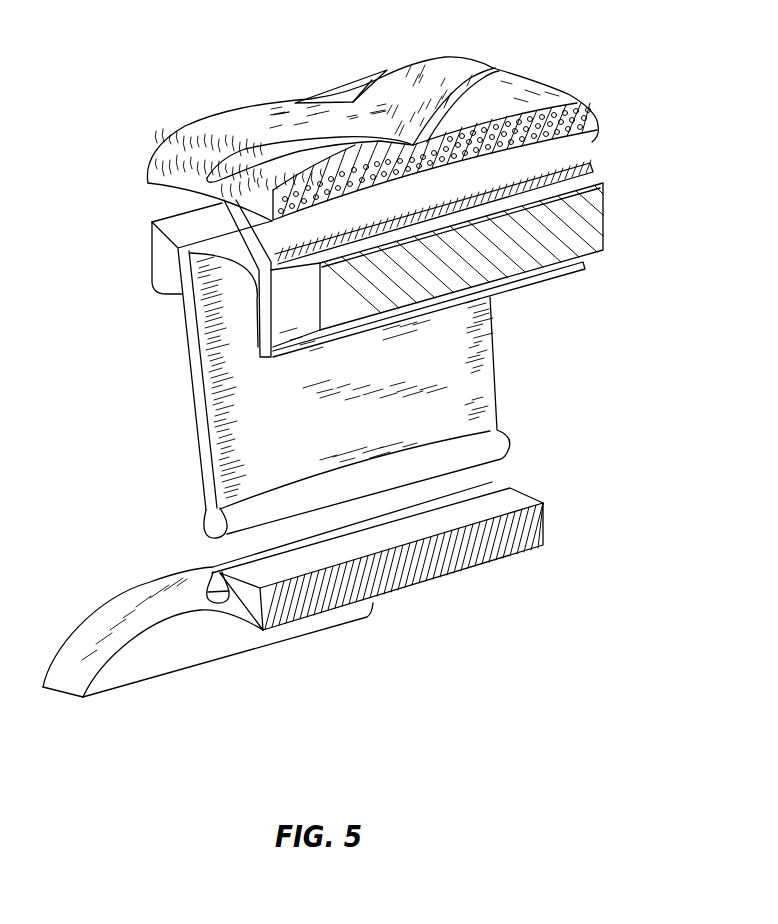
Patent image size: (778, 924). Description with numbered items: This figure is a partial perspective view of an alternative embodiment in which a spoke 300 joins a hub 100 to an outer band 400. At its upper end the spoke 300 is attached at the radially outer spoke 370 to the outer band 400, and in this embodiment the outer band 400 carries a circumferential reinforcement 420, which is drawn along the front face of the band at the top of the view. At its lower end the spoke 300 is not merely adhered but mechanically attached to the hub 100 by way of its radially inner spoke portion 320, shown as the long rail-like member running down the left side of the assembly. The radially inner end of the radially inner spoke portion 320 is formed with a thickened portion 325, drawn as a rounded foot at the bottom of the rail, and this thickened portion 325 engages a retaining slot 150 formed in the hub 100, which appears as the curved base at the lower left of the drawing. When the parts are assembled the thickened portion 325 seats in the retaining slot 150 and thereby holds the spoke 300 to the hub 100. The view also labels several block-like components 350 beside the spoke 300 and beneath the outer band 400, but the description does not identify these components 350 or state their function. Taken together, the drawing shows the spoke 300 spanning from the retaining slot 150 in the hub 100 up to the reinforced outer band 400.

The hub 100 is at (145, 662).
The retaining slot 150 is at (233, 608).
The spoke 300 is at (599, 138).
The radially inner spoke portion 320 is at (200, 382).
The thickened portion 325 is at (213, 528).
The support block 350 is at (160, 248).
The radially outer spoke 370 is at (265, 358).
The outer band 400 is at (532, 90).
The circumferential reinforcement 420 is at (598, 132).